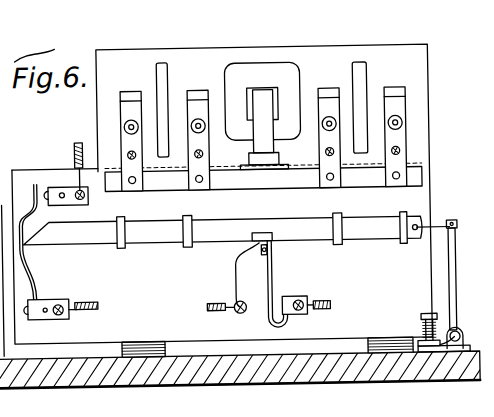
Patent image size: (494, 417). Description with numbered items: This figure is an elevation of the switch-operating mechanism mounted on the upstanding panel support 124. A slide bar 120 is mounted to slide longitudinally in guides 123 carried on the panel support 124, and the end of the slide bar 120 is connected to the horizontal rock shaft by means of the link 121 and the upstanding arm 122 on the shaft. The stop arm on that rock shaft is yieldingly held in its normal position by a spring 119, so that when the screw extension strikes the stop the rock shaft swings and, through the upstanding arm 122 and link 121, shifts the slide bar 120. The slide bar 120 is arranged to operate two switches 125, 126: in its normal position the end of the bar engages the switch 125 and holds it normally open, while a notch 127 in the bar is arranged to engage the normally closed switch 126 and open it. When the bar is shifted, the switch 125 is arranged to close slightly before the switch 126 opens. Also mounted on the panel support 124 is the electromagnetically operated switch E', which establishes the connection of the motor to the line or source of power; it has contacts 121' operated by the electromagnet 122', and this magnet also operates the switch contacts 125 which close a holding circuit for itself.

The spring 119 is at (418, 328).
The slide bar 120 is at (286, 231).
The link 121 is at (395, 122).
The contacts 121' is at (172, 108).
The upstanding arm 122 is at (455, 285).
The electromagnet 122' is at (262, 116).
The guides 123 is at (186, 246).
The panel support 124 is at (422, 103).
The switch 125 is at (394, 92).
The switch 126 is at (34, 181).
The notch 127 is at (262, 233).
The electromagnetically operated switch E' is at (320, 61).